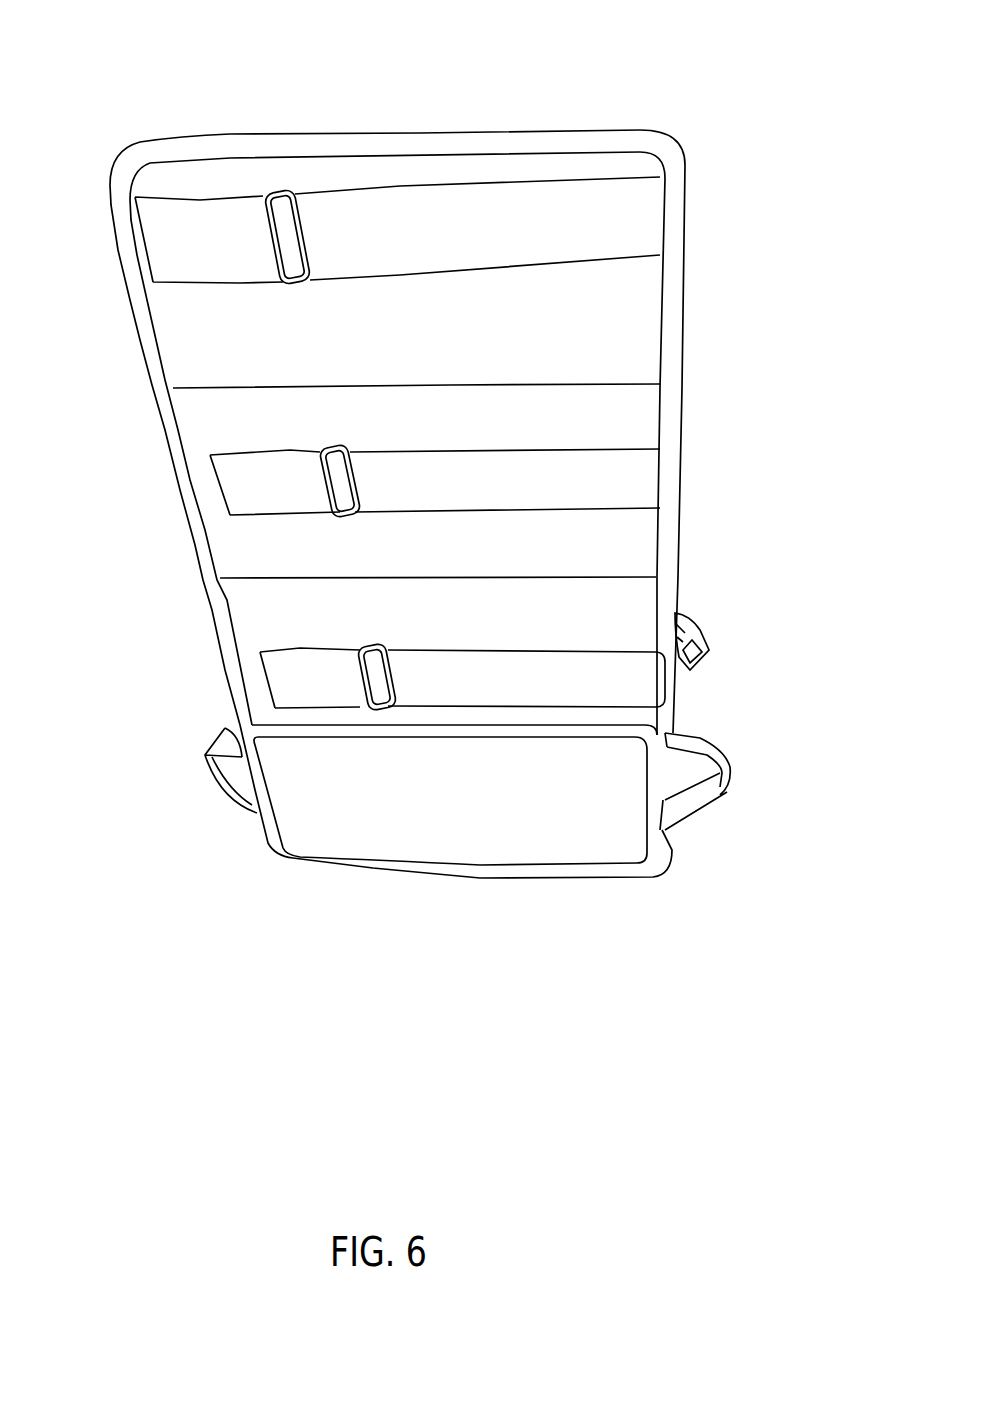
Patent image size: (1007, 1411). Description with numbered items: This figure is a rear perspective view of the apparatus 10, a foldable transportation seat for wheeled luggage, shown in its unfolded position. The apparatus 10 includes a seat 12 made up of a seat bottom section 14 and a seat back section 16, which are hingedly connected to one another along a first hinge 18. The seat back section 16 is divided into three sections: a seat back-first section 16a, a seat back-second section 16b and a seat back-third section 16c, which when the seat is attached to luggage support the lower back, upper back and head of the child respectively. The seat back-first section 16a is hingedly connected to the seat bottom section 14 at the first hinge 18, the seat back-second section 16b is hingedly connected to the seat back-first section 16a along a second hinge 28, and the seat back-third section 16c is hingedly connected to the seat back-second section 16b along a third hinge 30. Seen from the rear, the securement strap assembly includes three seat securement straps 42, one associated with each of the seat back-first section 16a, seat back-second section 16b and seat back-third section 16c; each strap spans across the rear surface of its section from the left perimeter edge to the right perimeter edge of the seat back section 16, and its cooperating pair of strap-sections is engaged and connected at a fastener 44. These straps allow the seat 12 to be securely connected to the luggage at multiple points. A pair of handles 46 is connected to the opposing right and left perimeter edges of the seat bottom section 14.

The apparatus 10 is at (706, 116).
The seat 12 is at (137, 160).
The seat bottom section 14 is at (650, 870).
The seat back section 16 is at (175, 460).
The seat back-first section 16a is at (665, 592).
The seat back-second section 16b is at (673, 425).
The seat back-third section 16c is at (675, 242).
The first hinge 18 is at (243, 717).
The second hinge 28 is at (193, 540).
The third hinge 30 is at (172, 410).
The seat securement strap 42 is at (492, 235).
The fastener 44 is at (270, 283).
The handle 46 is at (218, 772).